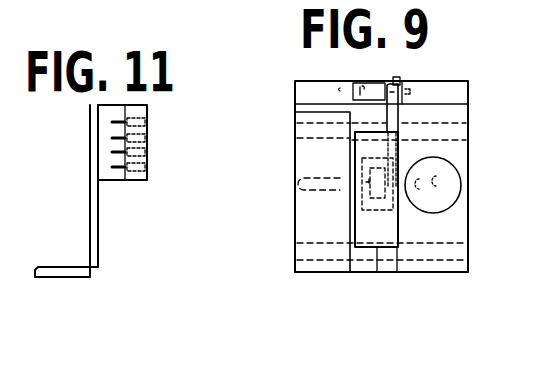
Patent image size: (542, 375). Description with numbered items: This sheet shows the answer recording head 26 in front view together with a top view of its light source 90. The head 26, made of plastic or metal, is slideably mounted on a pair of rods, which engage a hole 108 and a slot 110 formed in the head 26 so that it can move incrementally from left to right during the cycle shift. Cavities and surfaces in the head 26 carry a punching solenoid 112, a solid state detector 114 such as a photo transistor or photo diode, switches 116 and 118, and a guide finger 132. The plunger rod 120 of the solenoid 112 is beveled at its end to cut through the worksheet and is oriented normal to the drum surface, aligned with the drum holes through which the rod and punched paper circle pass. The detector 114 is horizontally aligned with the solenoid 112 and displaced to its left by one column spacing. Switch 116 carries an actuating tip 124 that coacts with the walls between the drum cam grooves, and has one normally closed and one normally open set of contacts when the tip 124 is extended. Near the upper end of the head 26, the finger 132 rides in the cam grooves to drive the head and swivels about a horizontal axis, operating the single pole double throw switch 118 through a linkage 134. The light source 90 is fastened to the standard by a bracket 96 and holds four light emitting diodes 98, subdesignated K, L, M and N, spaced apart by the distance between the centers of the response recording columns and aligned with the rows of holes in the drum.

In FIG. 9, the answer recording head 26 is at (294, 93).
In FIG. 11, the light source 90 is at (103, 133).
In FIG. 11, the bracket 96 is at (93, 251).
In FIG. 11, the light emitting diodes 98 is at (138, 178).
In FIG. 11, the diode N is at (148, 121).
In FIG. 11, the diode M is at (148, 137).
In FIG. 11, the diode L is at (148, 152).
In FIG. 11, the diode K is at (148, 167).
In FIG. 9, the hole 108 is at (470, 132).
In FIG. 9, the slot 110 is at (468, 252).
In FIG. 9, the punching solenoid 112 is at (457, 170).
In FIG. 9, the solid state detector 114 is at (422, 197).
In FIG. 9, the switch 116 is at (294, 152).
In FIG. 9, the single pole double throw switch 118 is at (378, 250).
In FIG. 9, the plunger rod 120 is at (440, 183).
In FIG. 9, the actuating tip 124 is at (366, 185).
In FIG. 9, the guide finger 132 is at (372, 80).
In FIG. 9, the linkage 134 is at (390, 120).